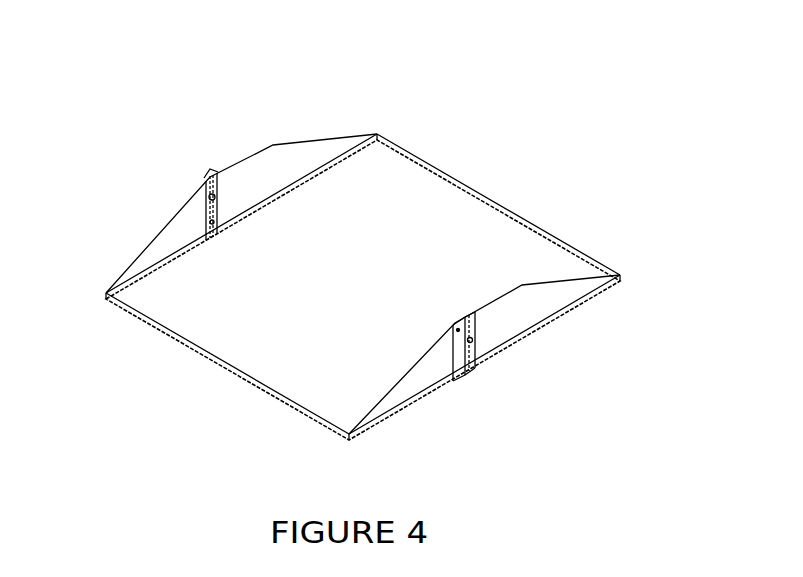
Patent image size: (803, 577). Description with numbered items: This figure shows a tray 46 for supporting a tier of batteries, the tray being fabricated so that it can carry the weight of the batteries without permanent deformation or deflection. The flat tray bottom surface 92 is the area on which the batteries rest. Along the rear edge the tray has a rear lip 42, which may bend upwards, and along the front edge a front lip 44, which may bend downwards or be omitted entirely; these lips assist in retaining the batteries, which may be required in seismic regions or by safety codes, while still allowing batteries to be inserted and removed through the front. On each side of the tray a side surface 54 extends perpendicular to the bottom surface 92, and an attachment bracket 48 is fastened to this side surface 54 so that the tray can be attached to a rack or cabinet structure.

The tray bottom surface 92 is at (363, 227).
The rear lip 42 is at (325, 256).
The tray 46 is at (498, 202).
The front lip 44 is at (329, 357).
The side surface 54 is at (515, 354).
The attachment bracket 48 is at (483, 385).